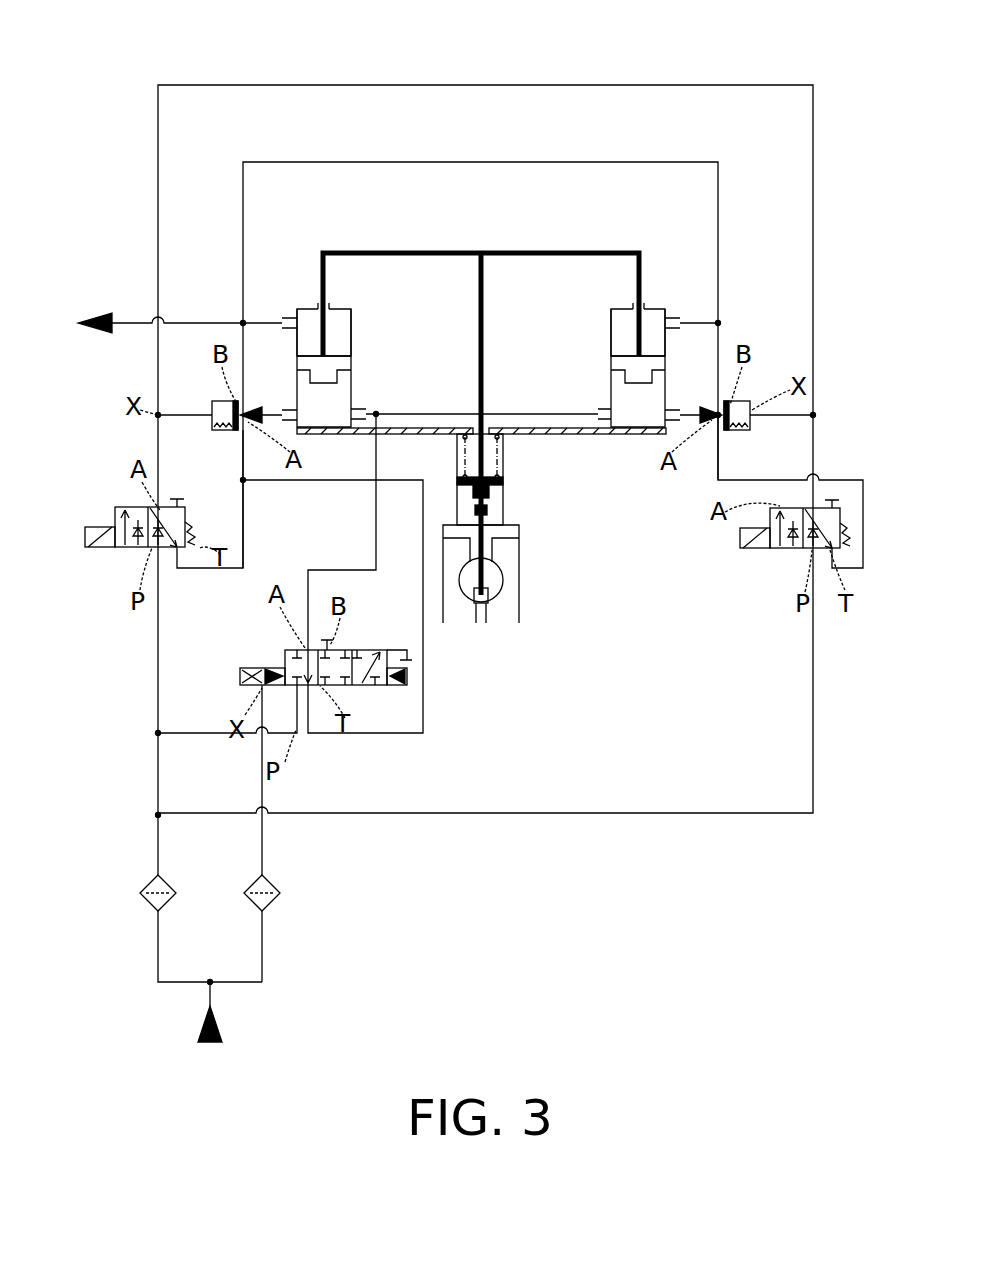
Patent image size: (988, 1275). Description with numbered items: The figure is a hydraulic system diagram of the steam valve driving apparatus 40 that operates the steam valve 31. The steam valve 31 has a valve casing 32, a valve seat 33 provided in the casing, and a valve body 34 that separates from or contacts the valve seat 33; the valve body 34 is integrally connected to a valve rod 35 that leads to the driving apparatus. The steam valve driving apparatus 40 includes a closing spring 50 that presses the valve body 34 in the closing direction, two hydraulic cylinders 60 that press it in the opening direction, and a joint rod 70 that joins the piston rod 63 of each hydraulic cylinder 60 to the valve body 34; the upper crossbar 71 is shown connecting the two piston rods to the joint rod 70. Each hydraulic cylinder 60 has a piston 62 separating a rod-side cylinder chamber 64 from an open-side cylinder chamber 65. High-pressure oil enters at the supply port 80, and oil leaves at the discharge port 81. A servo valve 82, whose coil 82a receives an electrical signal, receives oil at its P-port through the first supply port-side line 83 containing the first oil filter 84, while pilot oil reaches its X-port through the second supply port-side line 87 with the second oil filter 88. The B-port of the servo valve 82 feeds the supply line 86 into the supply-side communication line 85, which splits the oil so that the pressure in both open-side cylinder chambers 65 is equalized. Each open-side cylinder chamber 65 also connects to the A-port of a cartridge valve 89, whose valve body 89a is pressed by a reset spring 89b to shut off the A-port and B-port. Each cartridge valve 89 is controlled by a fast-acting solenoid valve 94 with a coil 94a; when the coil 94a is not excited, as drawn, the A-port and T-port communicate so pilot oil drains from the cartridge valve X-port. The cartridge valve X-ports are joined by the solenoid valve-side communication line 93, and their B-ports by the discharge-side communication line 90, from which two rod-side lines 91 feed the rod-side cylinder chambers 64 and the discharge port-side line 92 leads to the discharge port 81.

The steam valve driving apparatus 40 is at (138, 80).
The solenoid valve-side communication line 93 is at (347, 84).
The discharge-side communication line 90 is at (423, 160).
The connecting beam 71 is at (421, 251).
The joint rod 70 is at (485, 344).
The hydraulic cylinder 60 is at (304, 304).
The piston rod 63 is at (330, 276).
The rod-side cylinder chamber 64 is at (348, 324).
The piston 62 is at (330, 378).
The open-side cylinder chamber 65 is at (366, 410).
The supply-side communication line 85 is at (585, 436).
The closing spring 50 is at (503, 455).
The steam valve 31 is at (590, 556).
The valve rod 35 is at (505, 541).
The valve body 34 is at (503, 580).
The valve casing 32 is at (490, 600).
The valve seat 33 is at (490, 620).
The discharge port 81 is at (102, 313).
The discharge port-side line 92 is at (200, 320).
The rod-side line 91 is at (268, 320).
The cartridge valve 89 is at (213, 403).
The valve body 89a is at (240, 410).
The reset spring 89b is at (222, 432).
The fast-acting solenoid valve 94 is at (88, 527).
The coil 94a is at (88, 548).
The supply line 86 is at (375, 488).
The servo valve 82 is at (285, 664).
The coil 82a is at (245, 690).
The second supply port-side line 87 is at (262, 850).
The second oil filter 88 is at (280, 905).
The first supply port-side line 83 is at (158, 850).
The first oil filter 84 is at (143, 905).
The supply port 80 is at (224, 1022).